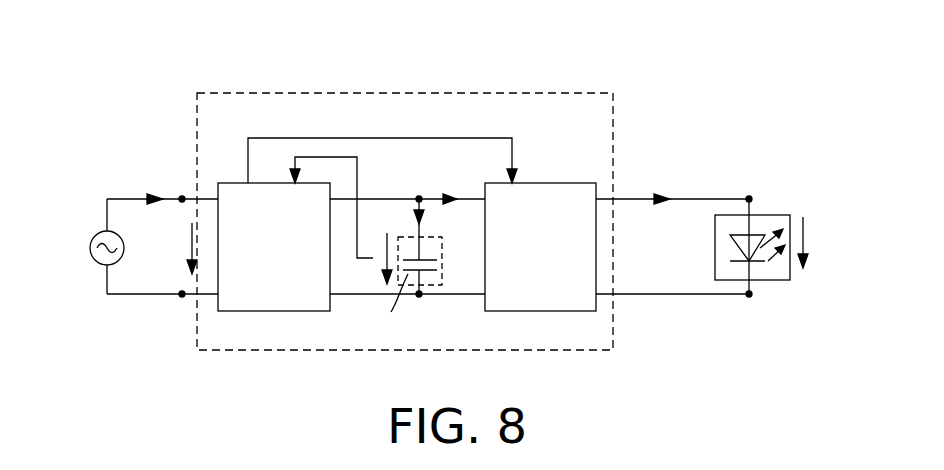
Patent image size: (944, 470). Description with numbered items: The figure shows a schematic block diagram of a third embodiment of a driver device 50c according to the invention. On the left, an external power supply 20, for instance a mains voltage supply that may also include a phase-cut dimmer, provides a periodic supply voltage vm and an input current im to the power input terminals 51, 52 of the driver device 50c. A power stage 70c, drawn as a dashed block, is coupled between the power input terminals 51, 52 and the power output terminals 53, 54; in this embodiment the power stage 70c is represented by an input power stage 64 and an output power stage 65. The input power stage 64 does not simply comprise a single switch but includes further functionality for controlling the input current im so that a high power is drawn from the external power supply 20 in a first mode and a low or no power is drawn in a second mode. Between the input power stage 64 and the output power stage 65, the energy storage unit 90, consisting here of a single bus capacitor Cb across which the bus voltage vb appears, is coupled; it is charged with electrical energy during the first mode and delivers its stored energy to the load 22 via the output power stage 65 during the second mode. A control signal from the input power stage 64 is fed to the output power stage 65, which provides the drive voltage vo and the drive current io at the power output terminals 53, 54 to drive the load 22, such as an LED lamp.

The driver device 50c is at (770, 49).
The external power supply 20 is at (90, 246).
The power input terminal 51 is at (182, 197).
The power input terminal 52 is at (180, 297).
The power stage 70c is at (527, 93).
The input power stage 64 is at (229, 183).
The output power stage 65 is at (563, 183).
The energy storage unit 90 is at (428, 285).
The power output terminal 53 is at (748, 197).
The power output terminal 54 is at (748, 297).
The load 22 is at (780, 215).